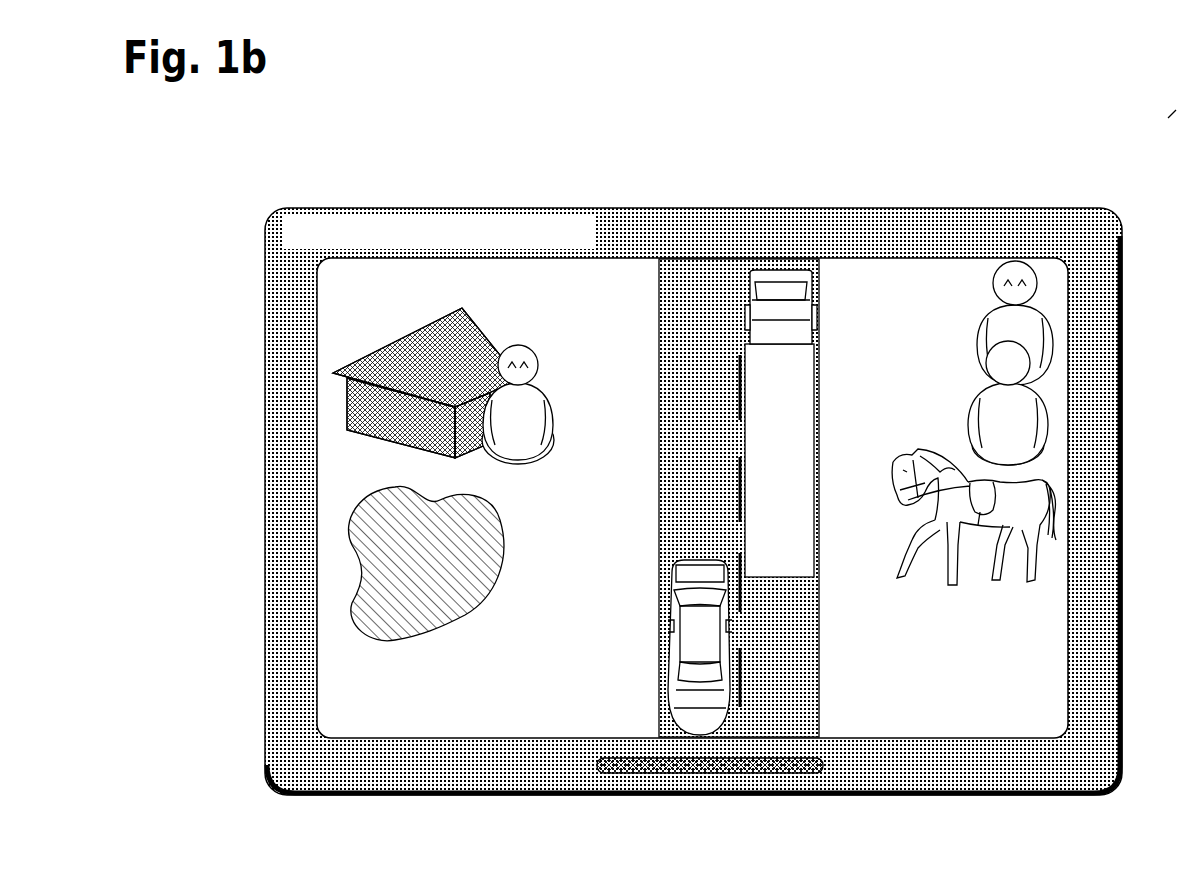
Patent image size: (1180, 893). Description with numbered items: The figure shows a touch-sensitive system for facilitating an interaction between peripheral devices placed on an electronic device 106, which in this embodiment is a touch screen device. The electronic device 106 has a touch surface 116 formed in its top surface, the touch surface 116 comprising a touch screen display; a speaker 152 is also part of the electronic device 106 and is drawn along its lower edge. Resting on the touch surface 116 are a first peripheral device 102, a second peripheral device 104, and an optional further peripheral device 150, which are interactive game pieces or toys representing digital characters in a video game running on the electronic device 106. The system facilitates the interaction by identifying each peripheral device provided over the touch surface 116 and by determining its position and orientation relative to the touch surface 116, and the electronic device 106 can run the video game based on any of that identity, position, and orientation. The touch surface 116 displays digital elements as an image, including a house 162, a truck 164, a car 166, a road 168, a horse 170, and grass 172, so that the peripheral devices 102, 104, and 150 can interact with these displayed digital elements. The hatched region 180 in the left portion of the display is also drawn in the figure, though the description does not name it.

The electronic device 106 is at (1097, 777).
The touch surface 116 is at (316, 692).
The peripheral device 102 is at (1035, 338).
The peripheral device 104 is at (1025, 426).
The peripheral device 150 is at (536, 424).
The speaker 152 is at (633, 777).
The house 162 is at (421, 427).
The truck 164 is at (798, 475).
The car 166 is at (716, 708).
The road 168 is at (798, 708).
The horse 170 is at (920, 528).
The grass 172 is at (539, 727).
The hatched region object 180 is at (443, 571).